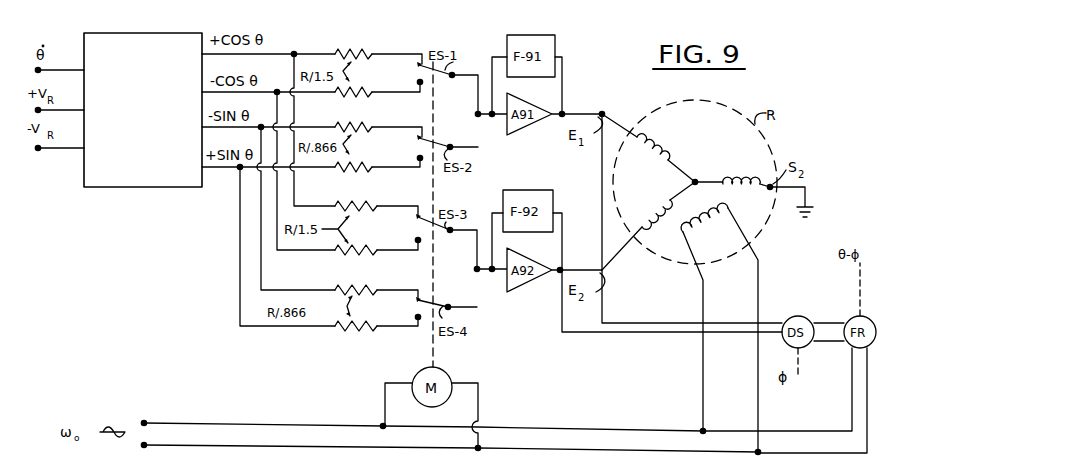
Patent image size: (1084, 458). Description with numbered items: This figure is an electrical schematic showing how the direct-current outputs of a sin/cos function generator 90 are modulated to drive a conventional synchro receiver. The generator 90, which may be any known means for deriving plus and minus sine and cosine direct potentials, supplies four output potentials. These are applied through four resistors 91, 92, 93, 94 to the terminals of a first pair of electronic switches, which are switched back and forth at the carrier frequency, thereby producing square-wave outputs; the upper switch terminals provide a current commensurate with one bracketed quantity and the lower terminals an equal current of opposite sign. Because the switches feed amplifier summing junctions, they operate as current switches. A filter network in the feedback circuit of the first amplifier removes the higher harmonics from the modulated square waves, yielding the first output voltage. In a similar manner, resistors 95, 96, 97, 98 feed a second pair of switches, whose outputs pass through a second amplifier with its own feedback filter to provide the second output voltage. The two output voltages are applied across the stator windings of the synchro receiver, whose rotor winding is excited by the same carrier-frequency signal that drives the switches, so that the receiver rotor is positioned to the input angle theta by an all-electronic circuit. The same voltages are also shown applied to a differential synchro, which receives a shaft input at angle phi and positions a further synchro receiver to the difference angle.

The sin/cos function generator 90 is at (128, 188).
The resistor 91 is at (361, 50).
The resistor 92 is at (362, 89).
The resistor 93 is at (364, 123).
The resistor 94 is at (364, 164).
The resistor 95 is at (364, 205).
The resistor 96 is at (364, 248).
The resistor 97 is at (364, 288).
The resistor 98 is at (338, 330).